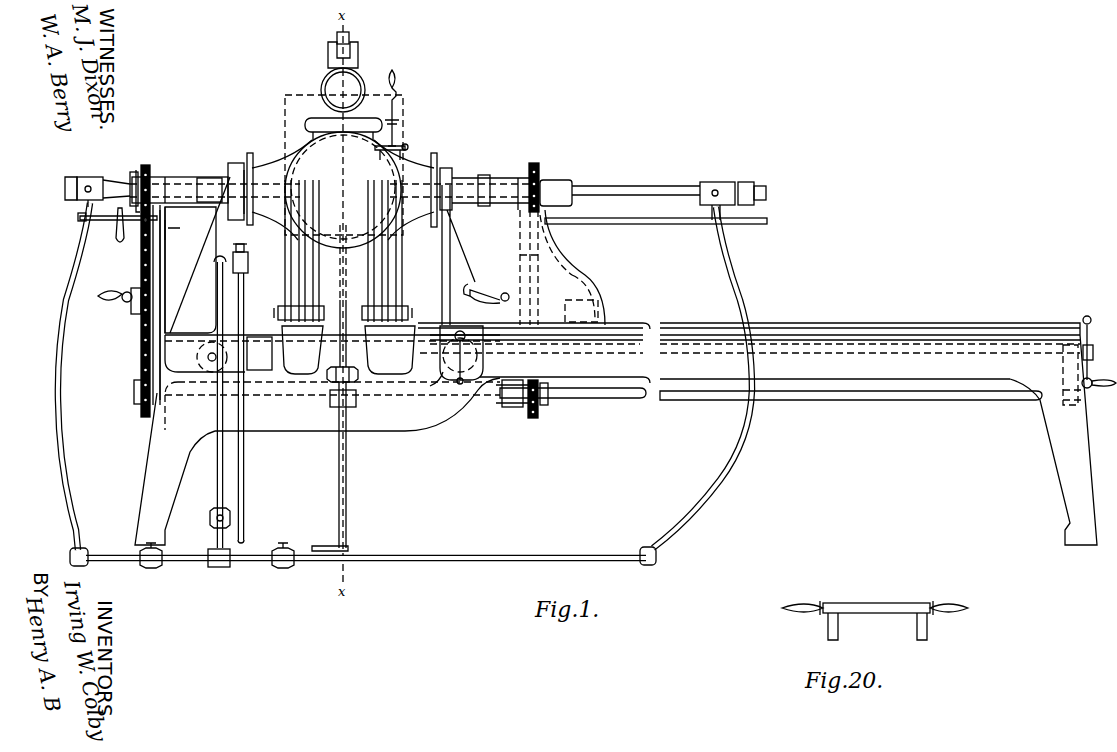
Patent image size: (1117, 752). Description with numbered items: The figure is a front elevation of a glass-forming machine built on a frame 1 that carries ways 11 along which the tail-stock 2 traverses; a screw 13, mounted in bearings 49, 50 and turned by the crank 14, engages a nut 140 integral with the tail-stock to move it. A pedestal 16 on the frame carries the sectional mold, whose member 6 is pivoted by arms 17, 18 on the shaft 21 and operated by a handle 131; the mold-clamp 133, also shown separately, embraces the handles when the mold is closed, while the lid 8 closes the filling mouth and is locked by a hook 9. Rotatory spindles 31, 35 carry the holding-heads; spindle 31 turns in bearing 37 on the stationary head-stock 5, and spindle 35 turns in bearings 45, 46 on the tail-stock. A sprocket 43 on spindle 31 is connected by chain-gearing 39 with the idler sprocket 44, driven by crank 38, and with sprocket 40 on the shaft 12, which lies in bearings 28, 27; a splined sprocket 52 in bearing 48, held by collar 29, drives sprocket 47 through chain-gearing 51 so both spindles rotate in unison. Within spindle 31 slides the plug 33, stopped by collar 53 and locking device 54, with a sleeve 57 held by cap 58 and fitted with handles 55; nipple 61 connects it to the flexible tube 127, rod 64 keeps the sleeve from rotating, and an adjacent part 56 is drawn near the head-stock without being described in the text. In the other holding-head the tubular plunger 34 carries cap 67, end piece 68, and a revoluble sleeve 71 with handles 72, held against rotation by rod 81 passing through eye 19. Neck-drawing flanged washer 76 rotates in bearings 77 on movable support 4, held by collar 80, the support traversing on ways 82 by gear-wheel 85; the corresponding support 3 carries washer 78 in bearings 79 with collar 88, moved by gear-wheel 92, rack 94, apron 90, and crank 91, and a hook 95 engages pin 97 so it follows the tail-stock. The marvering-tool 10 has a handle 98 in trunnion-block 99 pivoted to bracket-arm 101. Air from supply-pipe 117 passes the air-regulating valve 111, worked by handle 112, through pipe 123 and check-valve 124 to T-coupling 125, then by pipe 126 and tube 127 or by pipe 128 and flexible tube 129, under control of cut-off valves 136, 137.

In FIG. 1, the frame 1 is at (749, 353).
In FIG. 1, the tail-stock 2 is at (562, 267).
In FIG. 1, the movable support 3 is at (458, 255).
In FIG. 1, the movable support 4 is at (197, 255).
In FIG. 1, the head-stock 5 is at (162, 266).
In FIG. 1, the mold member 6 is at (343, 183).
In FIG. 1, the lid 8 is at (343, 90).
In FIG. 1, the hook 9 is at (352, 42).
In FIG. 1, the marvering-tool 10 is at (344, 165).
In FIG. 1, the ways 11 is at (976, 326).
In FIG. 1, the shaft 12 is at (874, 400).
In FIG. 1, the screw 13 is at (968, 356).
In FIG. 1, the crank 14 is at (1084, 318).
In FIG. 1, the pedestal 16 is at (330, 342).
In FIG. 1, the arms 17 is at (362, 268).
In FIG. 1, the arms 18 is at (351, 251).
In FIG. 1, the eye 19 is at (714, 230).
In FIG. 1, the shaft 21 is at (278, 312).
In FIG. 1, the bearing 27 is at (1045, 405).
In FIG. 1, the bearing 28 is at (160, 420).
In FIG. 1, the collar 29 is at (508, 408).
In FIG. 1, the rotatory spindle 31 is at (204, 176).
In FIG. 1, the plug 33 is at (130, 176).
In FIG. 1, the tubular plunger 34 is at (626, 192).
In FIG. 1, the rotatory spindle 35 is at (482, 206).
In FIG. 1, the bearing 37 is at (180, 178).
In FIG. 1, the crank 38 is at (104, 294).
In FIG. 1, the chain-gearing 39 is at (141, 350).
In FIG. 1, the sprocket 40 is at (134, 400).
In FIG. 1, the sprocket 43 is at (150, 170).
In FIG. 1, the sprocket 44 is at (133, 310).
In FIG. 1, the bearing 45 is at (514, 178).
In FIG. 1, the bearing 46 is at (572, 184).
In FIG. 1, the sprocket 47 is at (540, 168).
In FIG. 1, the bearing 48 is at (530, 418).
In FIG. 1, the bearing 49 is at (1066, 360).
In FIG. 1, the bearing 50 is at (422, 356).
In FIG. 1, the chain-gearing 51 is at (575, 245).
In FIG. 1, the sprocket 52 is at (548, 400).
In FIG. 1, the collar 53 is at (138, 170).
In FIG. 1, the locking device 54 is at (117, 232).
In FIG. 1, the handles 55 is at (80, 205).
In FIG. 1, the link 56 is at (165, 232).
In FIG. 1, the sleeve 57 is at (92, 182).
In FIG. 1, the cap 58 is at (65, 188).
In FIG. 1, the nipple 61 is at (80, 215).
In FIG. 1, the rod 64 is at (80, 222).
In FIG. 1, the cap 67 is at (750, 184).
In FIG. 1, the end piece 68 is at (766, 190).
In FIG. 1, the sleeve 71 is at (706, 184).
In FIG. 1, the handles 72 is at (716, 189).
In FIG. 1, the neck-drawing flanged washer 76 is at (252, 160).
In FIG. 1, the bearings 77 is at (243, 165).
In FIG. 1, the flanged neck-drawing washer 78 is at (436, 156).
In FIG. 1, the bearings 79 is at (450, 170).
In FIG. 1, the collar 80 is at (236, 174).
In FIG. 1, the rod 81 is at (767, 220).
In FIG. 1, the ways 82 is at (262, 345).
In FIG. 1, the gear-wheel 85 is at (197, 357).
In FIG. 1, the collar 88 is at (468, 176).
In FIG. 1, the apron 90 is at (478, 360).
In FIG. 1, the crank 91 is at (462, 385).
In FIG. 1, the gear-wheel 92 is at (435, 381).
In FIG. 1, the rack 94 is at (690, 350).
In FIG. 1, the hook 95 is at (486, 288).
In FIG. 1, the pin 97 is at (482, 302).
In FIG. 1, the handle 98 is at (346, 464).
In FIG. 1, the trunnion-block 99 is at (334, 407).
In FIG. 1, the bracket-arm 101 is at (356, 405).
In FIG. 1, the air-regulating valve 111 is at (248, 262).
In FIG. 1, the handle 112 is at (256, 240).
In FIG. 1, the supply-pipe 117 is at (244, 478).
In FIG. 1, the pipe 123 is at (217, 462).
In FIG. 1, the check-valve 124 is at (211, 518).
In FIG. 1, the T-coupling 125 is at (213, 568).
In FIG. 1, the pipe 126 is at (110, 553).
In FIG. 1, the flexible tube 127 is at (94, 385).
In FIG. 1, the pipe 128 is at (492, 560).
In FIG. 1, the flexible tube 129 is at (675, 516).
In FIG. 1, the handle 131 is at (400, 106).
In FIG. 1, the clamp 133 is at (406, 144).
In FIG. 20, the clamp 133 is at (858, 614).
In FIG. 1, the cut-off valve 136 is at (150, 565).
In FIG. 1, the cut-off valve 137 is at (279, 565).
In FIG. 1, the nut 140 is at (600, 310).